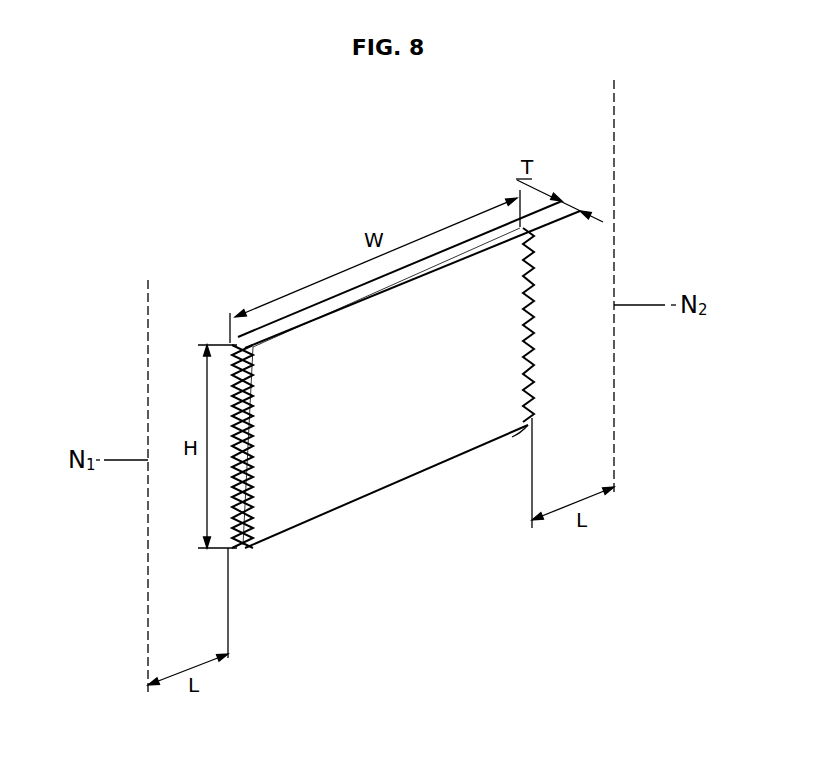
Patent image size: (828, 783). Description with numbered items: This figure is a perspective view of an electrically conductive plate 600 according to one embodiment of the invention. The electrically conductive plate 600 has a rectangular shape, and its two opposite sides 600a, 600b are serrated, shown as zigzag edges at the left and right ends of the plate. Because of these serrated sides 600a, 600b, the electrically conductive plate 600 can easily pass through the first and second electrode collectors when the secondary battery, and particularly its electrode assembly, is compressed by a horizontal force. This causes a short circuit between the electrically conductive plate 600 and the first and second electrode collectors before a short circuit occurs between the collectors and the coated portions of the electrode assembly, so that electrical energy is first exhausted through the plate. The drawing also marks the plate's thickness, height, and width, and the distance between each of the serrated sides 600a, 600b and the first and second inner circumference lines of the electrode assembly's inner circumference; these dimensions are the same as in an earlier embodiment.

The electrically conductive plate 600 is at (399, 468).
The first serrated side 600a is at (243, 535).
The second serrated side 600b is at (528, 335).